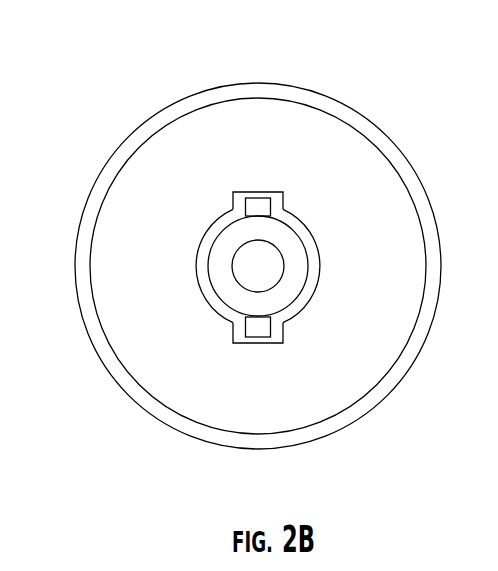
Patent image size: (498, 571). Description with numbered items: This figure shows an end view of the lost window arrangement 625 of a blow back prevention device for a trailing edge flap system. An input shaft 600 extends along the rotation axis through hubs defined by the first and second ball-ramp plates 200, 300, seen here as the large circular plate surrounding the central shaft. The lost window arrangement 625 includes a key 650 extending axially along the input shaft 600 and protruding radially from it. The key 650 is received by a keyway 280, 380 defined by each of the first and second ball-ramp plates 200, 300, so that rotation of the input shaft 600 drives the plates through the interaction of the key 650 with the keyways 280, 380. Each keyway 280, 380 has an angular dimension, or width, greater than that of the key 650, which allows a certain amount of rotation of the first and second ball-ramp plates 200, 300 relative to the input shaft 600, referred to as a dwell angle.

The first ball-ramp plate 200 is at (234, 258).
The second ball-ramp plate 300 is at (234, 258).
The keyway 280 is at (219, 258).
The keyway 380 is at (219, 258).
The lost window arrangement 625 is at (244, 188).
The key 650 is at (273, 207).
The input shaft 600 is at (303, 309).